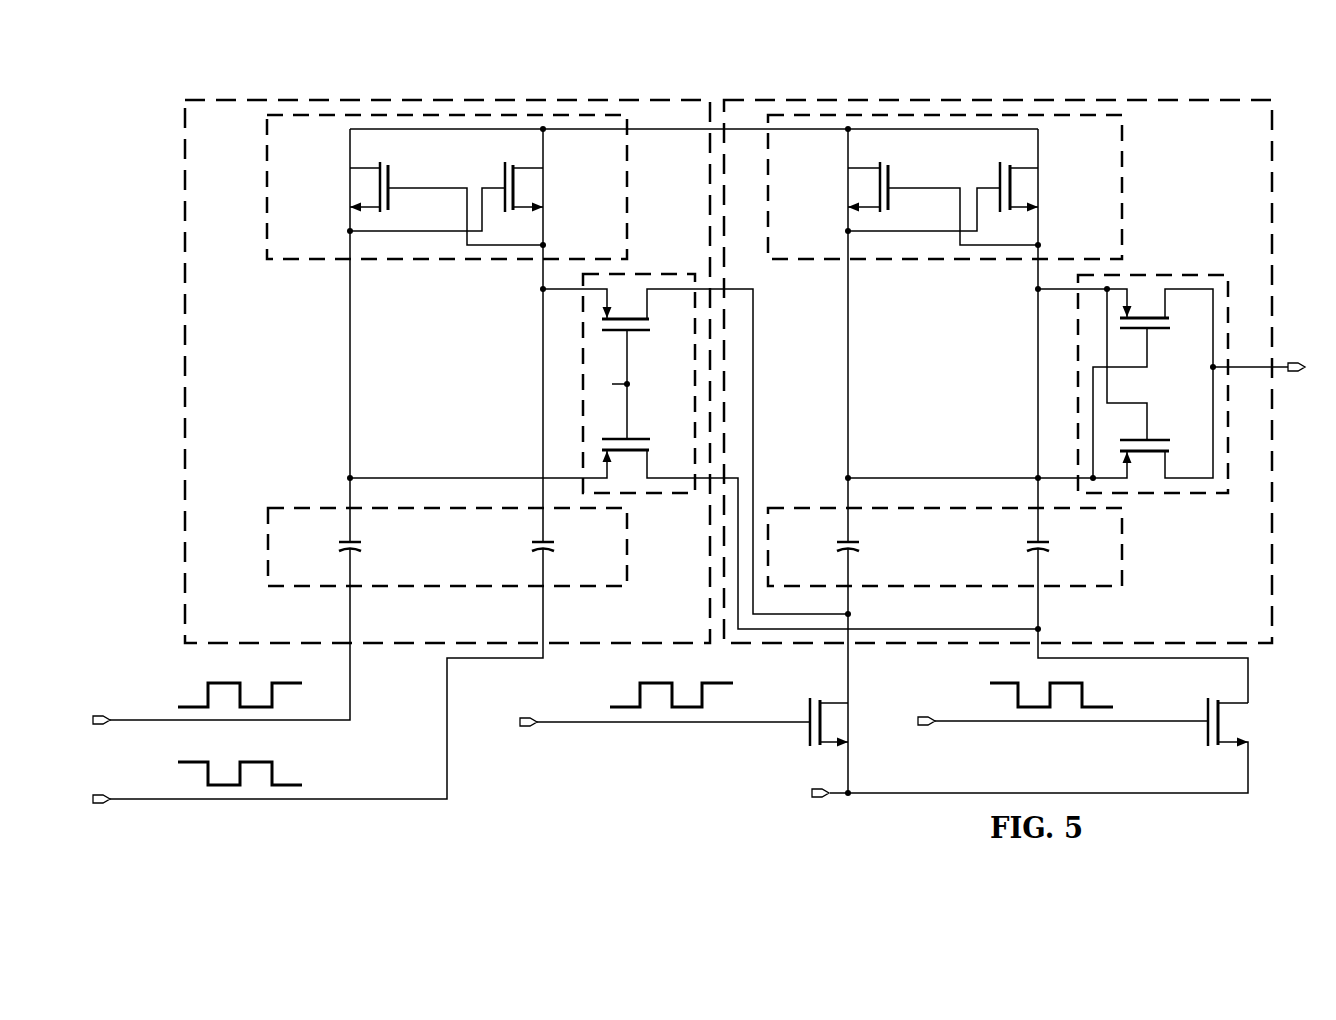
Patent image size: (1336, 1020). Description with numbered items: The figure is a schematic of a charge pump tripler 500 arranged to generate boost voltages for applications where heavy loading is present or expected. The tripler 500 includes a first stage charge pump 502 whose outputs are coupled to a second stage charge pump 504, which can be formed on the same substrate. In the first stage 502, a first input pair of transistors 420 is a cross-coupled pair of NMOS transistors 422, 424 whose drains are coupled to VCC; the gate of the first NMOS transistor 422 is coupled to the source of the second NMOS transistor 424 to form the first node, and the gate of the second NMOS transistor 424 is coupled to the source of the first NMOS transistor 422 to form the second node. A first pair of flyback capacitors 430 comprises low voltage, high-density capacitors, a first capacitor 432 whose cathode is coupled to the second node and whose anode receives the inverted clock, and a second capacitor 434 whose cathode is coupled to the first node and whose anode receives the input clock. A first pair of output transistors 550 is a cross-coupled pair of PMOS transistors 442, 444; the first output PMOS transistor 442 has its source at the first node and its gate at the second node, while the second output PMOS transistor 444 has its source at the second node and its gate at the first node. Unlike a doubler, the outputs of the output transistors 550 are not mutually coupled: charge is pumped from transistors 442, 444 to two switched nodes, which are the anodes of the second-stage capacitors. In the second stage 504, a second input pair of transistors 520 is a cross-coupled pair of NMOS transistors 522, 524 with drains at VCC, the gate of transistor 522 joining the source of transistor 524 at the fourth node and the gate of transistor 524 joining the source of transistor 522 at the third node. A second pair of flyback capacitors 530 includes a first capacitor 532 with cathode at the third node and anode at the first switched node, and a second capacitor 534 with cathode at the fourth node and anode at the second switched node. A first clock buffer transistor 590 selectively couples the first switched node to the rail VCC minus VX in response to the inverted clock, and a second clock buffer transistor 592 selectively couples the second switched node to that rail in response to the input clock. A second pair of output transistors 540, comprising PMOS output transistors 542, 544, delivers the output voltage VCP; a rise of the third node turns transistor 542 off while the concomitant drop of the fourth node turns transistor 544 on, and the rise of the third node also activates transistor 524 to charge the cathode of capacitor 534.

The charge pump tripler 500 is at (148, 88).
The first stage charge pump 502 is at (328, 95).
The second stage charge pump 504 is at (1115, 95).
The first input pair of transistors 420 is at (260, 187).
The first NMOS transistor 422 is at (390, 199).
The second NMOS transistor 424 is at (504, 176).
The first pair of flyback capacitors 430 is at (260, 560).
The first capacitor 432 is at (340, 547).
The second capacitor 434 is at (556, 547).
The first output PMOS transistor 442 is at (645, 333).
The second output PMOS transistor 444 is at (637, 436).
The second input pair of transistors 520 is at (1130, 187).
The first NMOS transistor of second stage 522 is at (890, 199).
The second NMOS transistor of second stage 524 is at (999, 176).
The second pair of flyback capacitors 530 is at (1131, 560).
The first capacitor of second stage 532 is at (838, 547).
The second capacitor of second stage 534 is at (1050, 547).
The second pair of output transistors 540 is at (1180, 266).
The output transistor 542 is at (1153, 331).
The output transistor 544 is at (1147, 437).
The first pair of output transistors 550 is at (665, 266).
The first clock buffer transistor 590 is at (808, 735).
The second clock buffer transistor 592 is at (1206, 735).